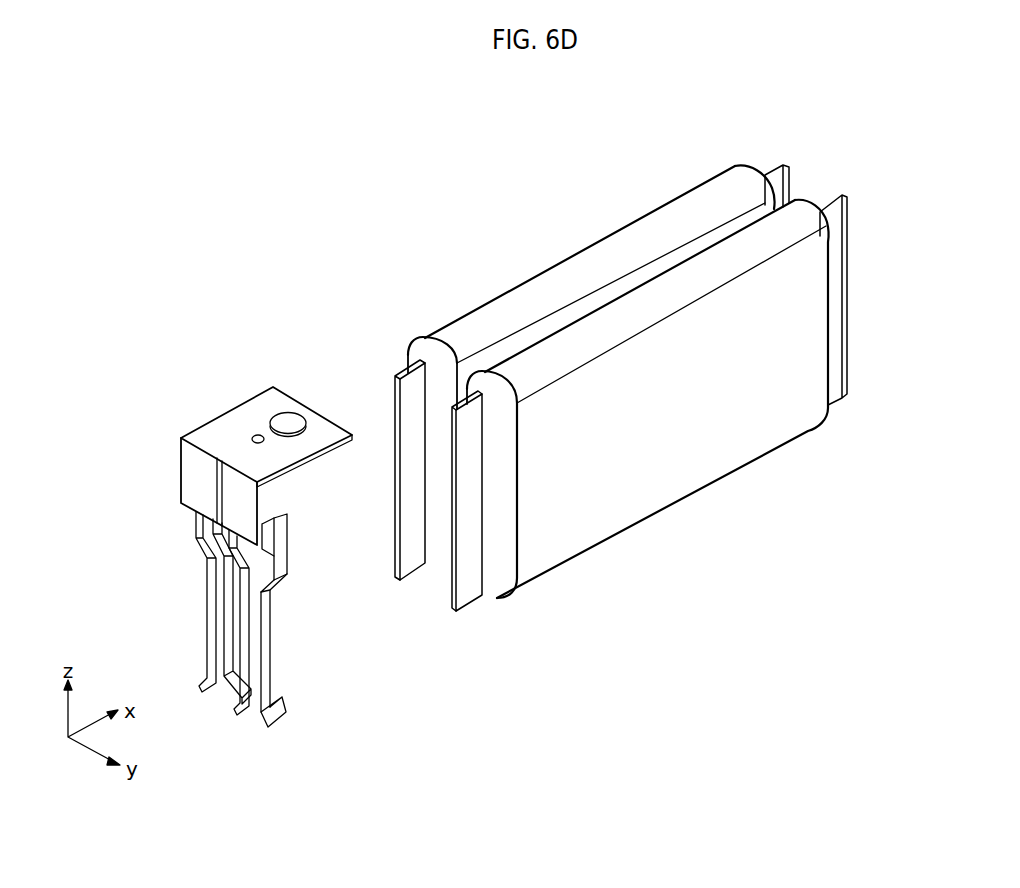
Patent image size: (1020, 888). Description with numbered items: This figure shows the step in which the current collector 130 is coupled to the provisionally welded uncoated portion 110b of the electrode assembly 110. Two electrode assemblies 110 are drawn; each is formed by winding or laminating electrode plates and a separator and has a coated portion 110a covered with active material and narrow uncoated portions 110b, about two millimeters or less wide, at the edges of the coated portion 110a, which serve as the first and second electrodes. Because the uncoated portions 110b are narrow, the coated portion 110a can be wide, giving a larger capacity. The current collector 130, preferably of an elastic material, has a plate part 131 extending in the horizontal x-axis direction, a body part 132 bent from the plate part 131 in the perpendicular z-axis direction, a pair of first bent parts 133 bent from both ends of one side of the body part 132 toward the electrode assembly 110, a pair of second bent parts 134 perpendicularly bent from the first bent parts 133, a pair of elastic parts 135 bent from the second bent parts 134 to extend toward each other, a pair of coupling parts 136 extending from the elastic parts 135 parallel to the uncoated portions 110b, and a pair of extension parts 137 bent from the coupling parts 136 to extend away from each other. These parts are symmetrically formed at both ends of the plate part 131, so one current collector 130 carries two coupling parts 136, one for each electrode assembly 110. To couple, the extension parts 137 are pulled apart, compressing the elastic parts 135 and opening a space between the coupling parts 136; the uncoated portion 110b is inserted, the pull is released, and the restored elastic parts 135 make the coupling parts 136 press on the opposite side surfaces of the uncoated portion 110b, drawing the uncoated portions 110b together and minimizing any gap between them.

The electrode assembly 110 is at (621, 419).
The coated portion 110a is at (650, 498).
The uncoated portion 110b is at (495, 580).
The current collector 130 is at (234, 532).
The plate part 131 is at (318, 420).
The body part 132 is at (253, 502).
The first bent part 133 is at (270, 543).
The second bent part 134 is at (285, 558).
The elastic part 135 is at (277, 587).
The coupling part 136 is at (270, 627).
The extension part 137 is at (278, 712).